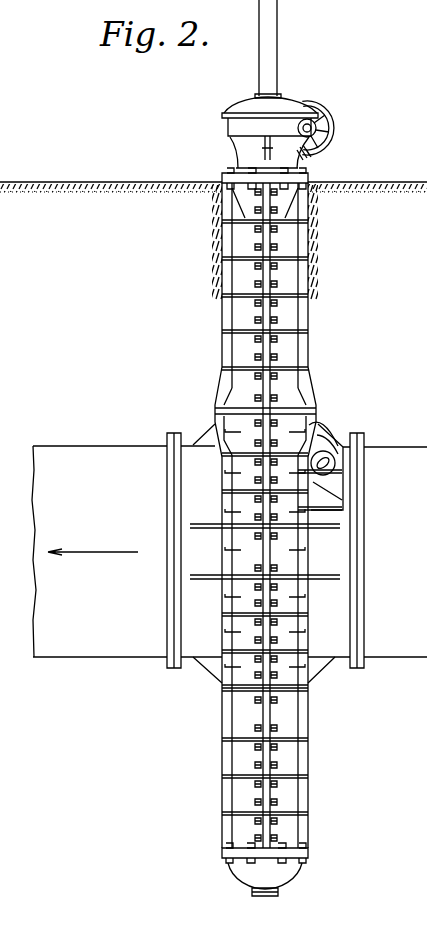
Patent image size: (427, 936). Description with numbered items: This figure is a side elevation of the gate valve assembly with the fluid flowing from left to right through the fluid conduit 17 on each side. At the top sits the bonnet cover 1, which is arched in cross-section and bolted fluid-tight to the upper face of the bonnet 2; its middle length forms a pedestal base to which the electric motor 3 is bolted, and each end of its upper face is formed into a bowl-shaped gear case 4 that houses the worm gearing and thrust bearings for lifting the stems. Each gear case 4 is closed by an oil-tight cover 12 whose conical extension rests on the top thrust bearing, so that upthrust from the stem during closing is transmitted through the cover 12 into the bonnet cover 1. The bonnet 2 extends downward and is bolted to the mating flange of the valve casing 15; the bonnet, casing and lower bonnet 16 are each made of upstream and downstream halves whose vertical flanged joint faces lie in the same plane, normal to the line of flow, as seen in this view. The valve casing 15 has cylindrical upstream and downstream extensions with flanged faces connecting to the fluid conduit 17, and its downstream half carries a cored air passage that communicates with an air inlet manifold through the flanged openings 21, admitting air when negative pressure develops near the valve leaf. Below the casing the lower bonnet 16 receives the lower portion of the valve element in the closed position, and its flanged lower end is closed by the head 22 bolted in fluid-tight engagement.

The bonnet cover 1 is at (240, 163).
The bonnet 2 is at (240, 242).
The electric motor 3 is at (326, 113).
The gear cases 4 is at (232, 125).
The oil-tight covers 12 is at (286, 106).
The valve casing 15 is at (186, 452).
The lower bonnet 16 is at (222, 786).
The fluid conduit 17 is at (130, 431).
The flanged openings 21 is at (327, 457).
The head 22 is at (242, 868).